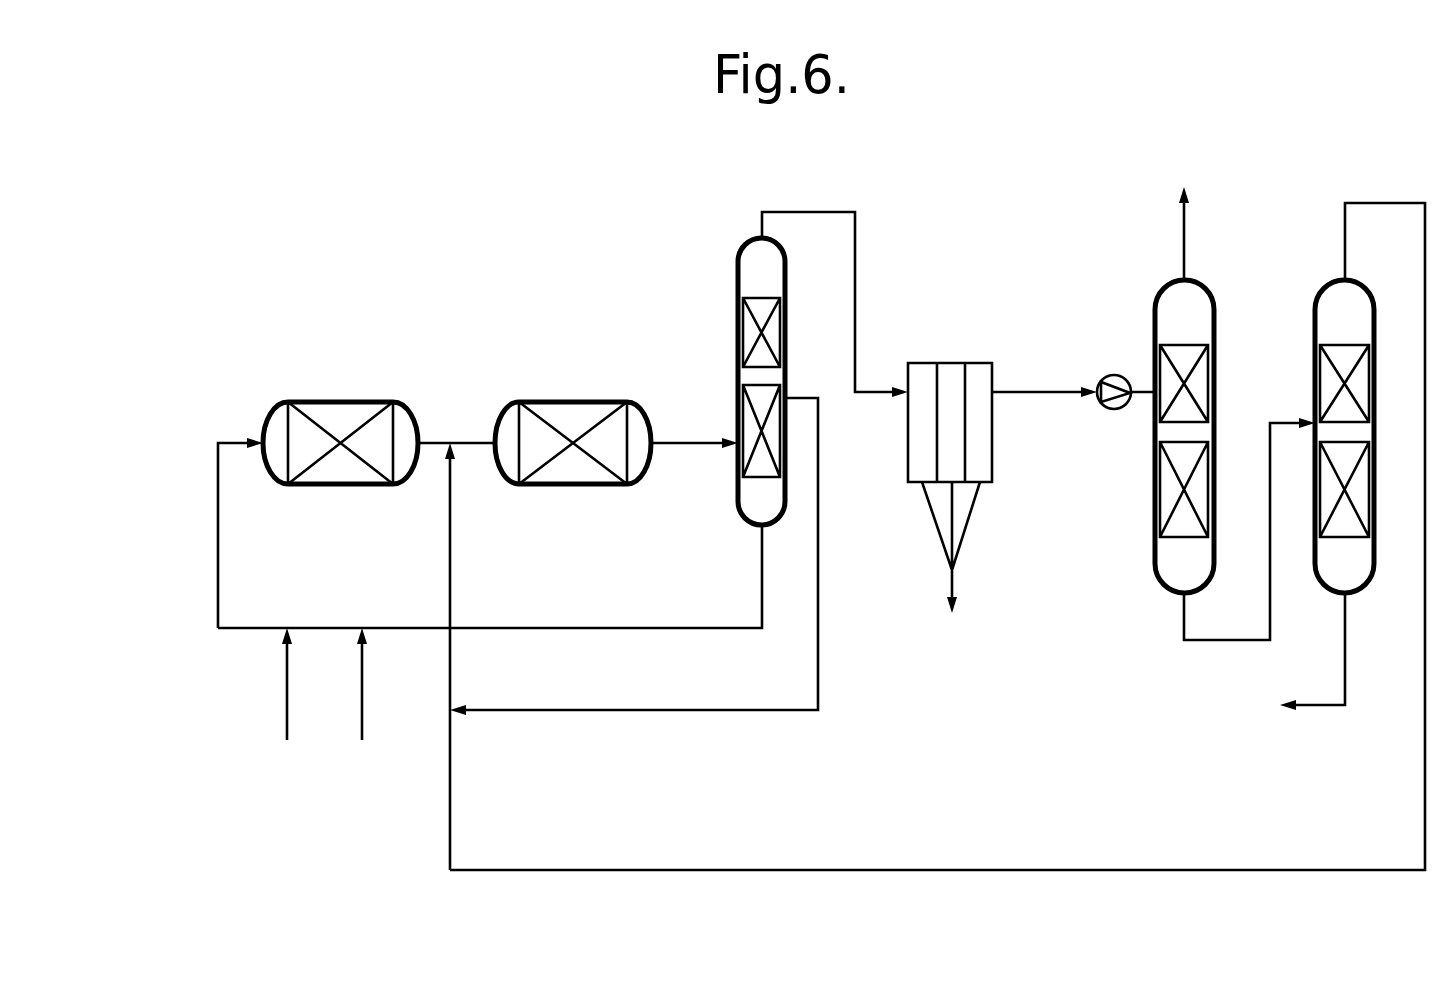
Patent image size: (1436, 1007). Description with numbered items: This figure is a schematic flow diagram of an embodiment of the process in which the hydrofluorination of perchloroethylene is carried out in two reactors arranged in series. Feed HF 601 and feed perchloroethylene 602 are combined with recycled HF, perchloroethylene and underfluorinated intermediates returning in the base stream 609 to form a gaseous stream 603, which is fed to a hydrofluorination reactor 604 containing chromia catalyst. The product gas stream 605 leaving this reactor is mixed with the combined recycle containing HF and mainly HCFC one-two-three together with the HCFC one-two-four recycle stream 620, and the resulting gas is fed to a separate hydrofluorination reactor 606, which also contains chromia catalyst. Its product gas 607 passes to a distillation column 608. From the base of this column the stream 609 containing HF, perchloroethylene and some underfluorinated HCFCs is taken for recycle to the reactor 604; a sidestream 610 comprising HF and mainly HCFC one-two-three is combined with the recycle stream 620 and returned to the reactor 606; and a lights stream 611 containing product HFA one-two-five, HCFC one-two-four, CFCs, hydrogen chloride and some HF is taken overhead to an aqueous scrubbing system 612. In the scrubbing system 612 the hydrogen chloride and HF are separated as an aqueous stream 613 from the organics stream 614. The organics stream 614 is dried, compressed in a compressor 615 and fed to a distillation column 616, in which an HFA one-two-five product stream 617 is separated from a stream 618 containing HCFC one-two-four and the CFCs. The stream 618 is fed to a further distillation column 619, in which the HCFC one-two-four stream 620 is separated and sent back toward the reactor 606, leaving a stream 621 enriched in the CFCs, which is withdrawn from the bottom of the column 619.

The feed HF 601 is at (287, 722).
The feed perchloroethylene 602 is at (362, 725).
The gaseous stream 603 is at (218, 560).
The hydrofluorination reactor 604 is at (350, 400).
The product gas stream 605 is at (477, 440).
The hydrofluorination reactor 606 is at (570, 400).
The product gas 607 is at (690, 440).
The distillation column 608 is at (740, 318).
The stream 609 is at (762, 578).
The stream 610 is at (820, 578).
The lights stream 611 is at (787, 210).
The aqueous scrubbing system 612 is at (978, 450).
The aqueous stream 613 is at (968, 535).
The organics stream 614 is at (1030, 392).
The compressor 615 is at (1118, 408).
The distillation column 616 is at (1155, 550).
The HFA 125 stream 617 is at (1180, 240).
The stream 618 is at (1182, 632).
The distillation column 619 is at (1317, 308).
The HCFC 124 recycle stream 620 is at (1345, 245).
The stream enriched in CFCs 114/114a 621 is at (1322, 707).